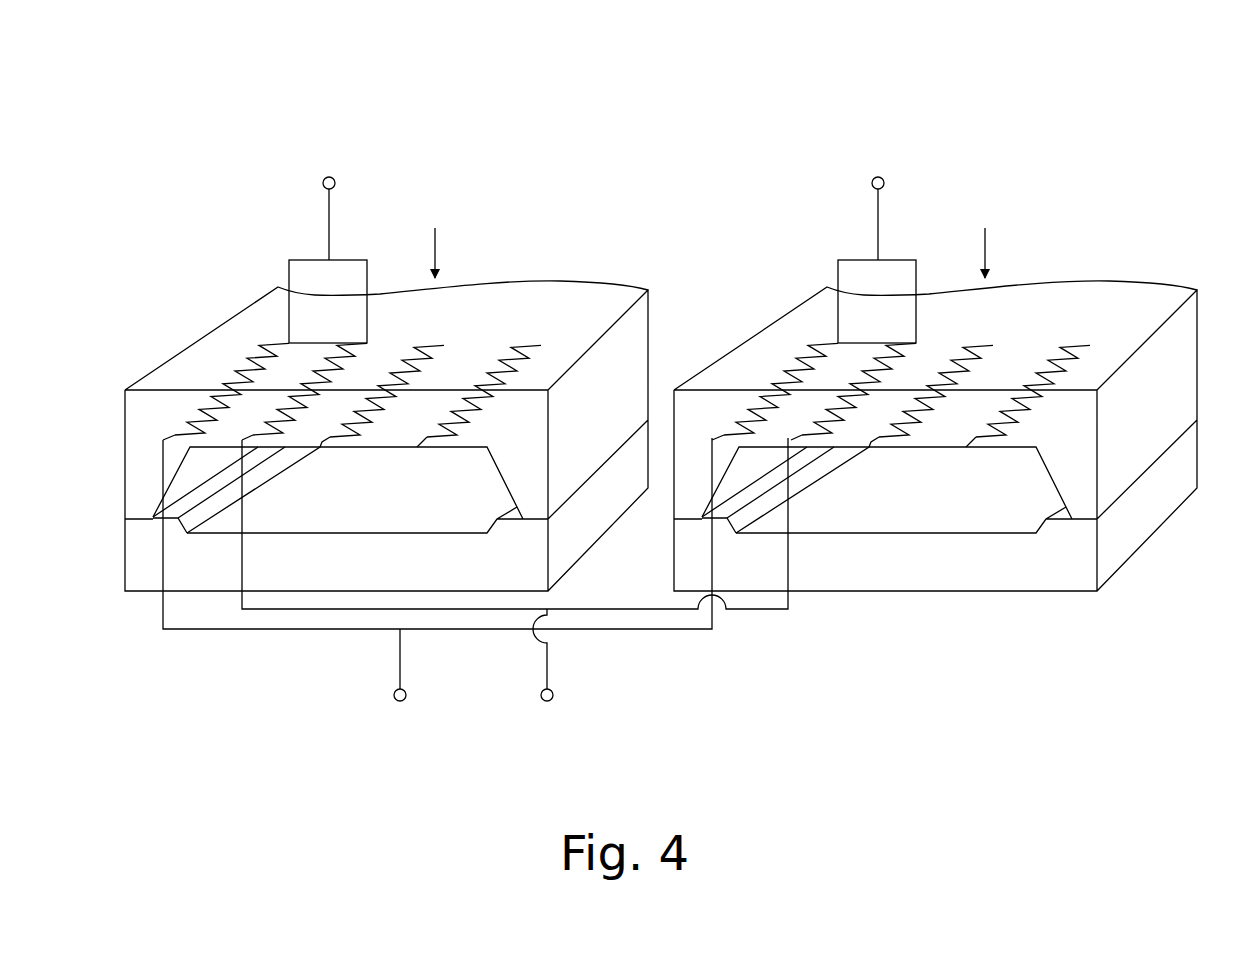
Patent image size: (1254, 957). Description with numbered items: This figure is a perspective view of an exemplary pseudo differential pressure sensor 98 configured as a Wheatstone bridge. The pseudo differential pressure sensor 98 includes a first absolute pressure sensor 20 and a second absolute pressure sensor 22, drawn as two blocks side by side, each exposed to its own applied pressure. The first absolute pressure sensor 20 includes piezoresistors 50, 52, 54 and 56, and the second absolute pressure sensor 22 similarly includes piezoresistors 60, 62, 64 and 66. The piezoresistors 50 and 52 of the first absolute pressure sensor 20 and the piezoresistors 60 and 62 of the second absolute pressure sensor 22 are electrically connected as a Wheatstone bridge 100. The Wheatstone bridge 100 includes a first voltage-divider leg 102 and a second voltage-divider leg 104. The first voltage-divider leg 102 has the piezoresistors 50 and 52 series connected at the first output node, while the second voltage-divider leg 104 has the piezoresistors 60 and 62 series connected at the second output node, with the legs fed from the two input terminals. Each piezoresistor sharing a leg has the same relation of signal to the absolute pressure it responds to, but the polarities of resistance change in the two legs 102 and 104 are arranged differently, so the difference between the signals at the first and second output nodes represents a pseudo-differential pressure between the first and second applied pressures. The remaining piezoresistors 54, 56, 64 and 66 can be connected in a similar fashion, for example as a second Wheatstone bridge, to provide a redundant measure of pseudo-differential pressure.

The pseudo differential pressure sensor 98 is at (1010, 131).
The first absolute pressure sensor 20 is at (388, 370).
The second absolute pressure sensor 22 is at (935, 370).
The piezoresistor 50 is at (250, 353).
The piezoresistor 52 is at (319, 355).
The piezoresistor 54 is at (447, 363).
The piezoresistor 56 is at (542, 356).
The piezoresistor 60 is at (800, 353).
The piezoresistor 62 is at (878, 355).
The piezoresistor 64 is at (996, 363).
The piezoresistor 66 is at (1091, 356).
The Wheatstone bridge 100 is at (504, 590).
The first voltage-divider leg 102 is at (225, 630).
The second voltage-divider leg 104 is at (767, 611).